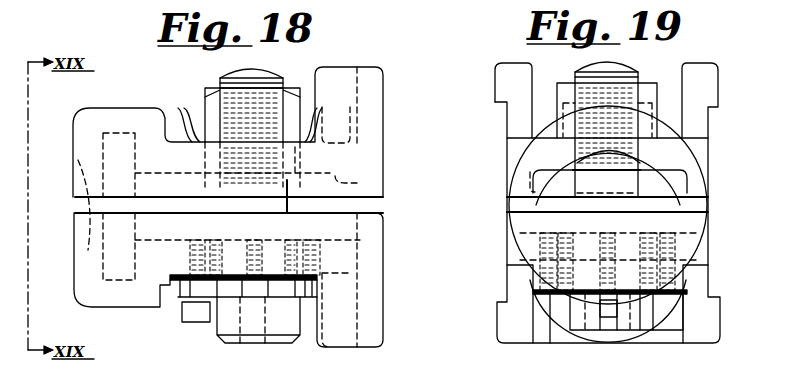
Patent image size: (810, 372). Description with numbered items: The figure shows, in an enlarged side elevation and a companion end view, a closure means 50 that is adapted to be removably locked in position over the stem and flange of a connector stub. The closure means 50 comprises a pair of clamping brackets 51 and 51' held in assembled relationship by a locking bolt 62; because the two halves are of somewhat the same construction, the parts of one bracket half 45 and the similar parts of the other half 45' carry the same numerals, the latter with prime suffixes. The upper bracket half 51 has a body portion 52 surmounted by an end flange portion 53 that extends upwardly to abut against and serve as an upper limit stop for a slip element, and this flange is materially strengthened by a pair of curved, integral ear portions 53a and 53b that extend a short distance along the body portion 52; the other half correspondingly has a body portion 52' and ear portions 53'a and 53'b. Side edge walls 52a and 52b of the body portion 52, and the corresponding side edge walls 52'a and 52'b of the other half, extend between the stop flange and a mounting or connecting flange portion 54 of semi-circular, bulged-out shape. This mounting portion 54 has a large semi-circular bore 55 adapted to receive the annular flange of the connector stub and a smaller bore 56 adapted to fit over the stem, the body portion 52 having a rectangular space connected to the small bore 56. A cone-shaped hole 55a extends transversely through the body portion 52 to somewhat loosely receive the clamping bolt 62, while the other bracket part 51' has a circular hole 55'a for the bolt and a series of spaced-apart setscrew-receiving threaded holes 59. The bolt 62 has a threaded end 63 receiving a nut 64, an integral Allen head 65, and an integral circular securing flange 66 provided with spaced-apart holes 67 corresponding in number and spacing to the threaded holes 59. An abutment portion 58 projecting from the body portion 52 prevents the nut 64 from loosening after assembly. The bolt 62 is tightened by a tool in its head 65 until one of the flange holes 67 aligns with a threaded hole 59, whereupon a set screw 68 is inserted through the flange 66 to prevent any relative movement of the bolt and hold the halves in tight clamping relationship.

In FIG. 18, the bracket half 45 is at (247, 158).
In FIG. 18, the other bracket half 45' is at (251, 280).
In FIG. 18, the closure means 50 is at (107, 108).
In FIG. 19, the closure means 50 is at (512, 63).
In FIG. 18, the upper bracket half 51 is at (55, 155).
In FIG. 19, the upper bracket half 51 is at (478, 130).
In FIG. 18, the other bracket part 51' is at (55, 261).
In FIG. 19, the other bracket part 51' is at (479, 273).
In FIG. 18, the body portion 52 is at (288, 135).
In FIG. 19, the body portion 52 is at (632, 205).
In FIG. 19, the body portion 52' is at (730, 268).
In FIG. 18, the side edge wall 52a is at (163, 195).
In FIG. 19, the side edge wall 52a is at (507, 168).
In FIG. 19, the side edge wall 52b is at (708, 162).
In FIG. 19, the side edge wall 52'a is at (478, 216).
In FIG. 18, the side edge wall 52'b is at (187, 208).
In FIG. 19, the side edge wall 52'b is at (737, 213).
In FIG. 18, the end flange portion 53 is at (400, 96).
In FIG. 19, the end flange portion 53 is at (699, 46).
In FIG. 18, the ear portion 53a is at (340, 77).
In FIG. 19, the ear portion 53a is at (497, 87).
In FIG. 19, the ear portion 53b is at (708, 78).
In FIG. 18, the ear portion 53'a is at (342, 354).
In FIG. 19, the ear portion 53'a is at (469, 326).
In FIG. 19, the ear portion 53'b is at (741, 320).
In FIG. 18, the mounting flange portion 54 is at (130, 108).
In FIG. 18, the semi-circular bore 55 is at (153, 157).
In FIG. 18, the hole 55a is at (298, 157).
In FIG. 19, the hole 55a is at (690, 140).
In FIG. 18, the circular hole 55'a is at (307, 229).
In FIG. 19, the circular hole 55'a is at (566, 286).
In FIG. 18, the smaller bore 56 is at (73, 203).
In FIG. 18, the abutment portion 58 is at (312, 84).
In FIG. 18, the threaded holes 59 is at (283, 252).
In FIG. 19, the threaded holes 59 is at (575, 225).
In FIG. 18, the locking bolt 62 is at (383, 204).
In FIG. 19, the locking bolt 62 is at (708, 207).
In FIG. 18, the threaded end 63 is at (222, 80).
In FIG. 19, the threaded end 63 is at (580, 72).
In FIG. 18, the nut 64 is at (294, 84).
In FIG. 19, the nut 64 is at (568, 83).
In FIG. 18, the Allen head 65 is at (220, 322).
In FIG. 19, the Allen head 65 is at (645, 330).
In FIG. 18, the securing flange 66 is at (173, 281).
In FIG. 19, the securing flange 66 is at (710, 284).
In FIG. 18, the holes 67 is at (183, 290).
In FIG. 19, the holes 67 is at (566, 296).
In FIG. 18, the set screw 68 is at (188, 320).
In FIG. 19, the set screw 68 is at (608, 318).